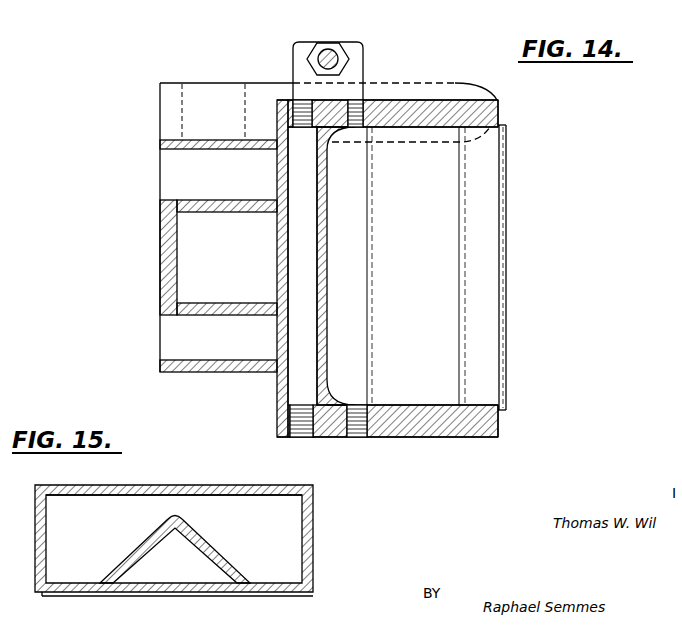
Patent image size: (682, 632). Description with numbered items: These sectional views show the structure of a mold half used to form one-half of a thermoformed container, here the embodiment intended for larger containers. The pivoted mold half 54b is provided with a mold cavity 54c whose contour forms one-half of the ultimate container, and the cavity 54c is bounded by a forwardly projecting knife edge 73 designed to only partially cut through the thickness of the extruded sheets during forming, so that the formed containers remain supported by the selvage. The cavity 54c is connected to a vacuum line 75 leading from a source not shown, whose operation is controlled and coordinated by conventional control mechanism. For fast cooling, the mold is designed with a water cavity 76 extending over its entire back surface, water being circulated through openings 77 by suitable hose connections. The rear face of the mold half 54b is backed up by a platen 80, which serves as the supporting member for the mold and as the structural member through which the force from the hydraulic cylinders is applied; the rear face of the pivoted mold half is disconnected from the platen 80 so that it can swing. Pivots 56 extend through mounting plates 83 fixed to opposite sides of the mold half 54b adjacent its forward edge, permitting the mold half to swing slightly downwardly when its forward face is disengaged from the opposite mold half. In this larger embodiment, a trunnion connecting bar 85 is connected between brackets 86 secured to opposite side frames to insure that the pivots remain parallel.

In FIG. 14, the mounting plate 83 is at (160, 108).
In FIG. 14, the platen 80 is at (176, 262).
In FIG. 14, the pivoted mold half 54b is at (475, 440).
In FIG. 15, the pivoted mold half 54b is at (315, 547).
In FIG. 14, the mold cavity 54c is at (428, 256).
In FIG. 15, the mold cavity 54c is at (231, 580).
In FIG. 14, the pivot 56 is at (475, 96).
In FIG. 14, the knife edge 73 is at (507, 128).
In FIG. 14, the vacuum line 75 is at (360, 110).
In FIG. 14, the water cavity 76 is at (306, 266).
In FIG. 15, the water cavity 76 is at (205, 512).
In FIG. 14, the opening 77 is at (295, 100).
In FIG. 14, the trunnion connecting bar 85 is at (324, 51).
In FIG. 14, the bracket 86 is at (341, 46).